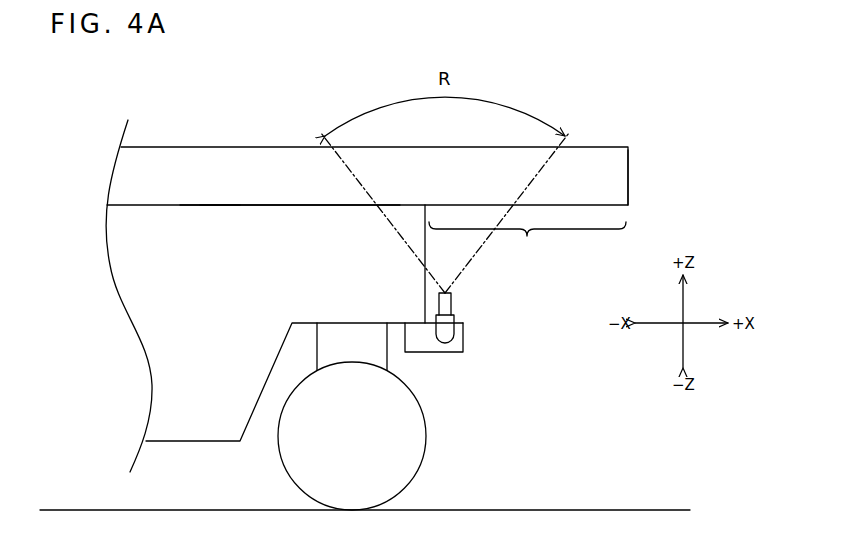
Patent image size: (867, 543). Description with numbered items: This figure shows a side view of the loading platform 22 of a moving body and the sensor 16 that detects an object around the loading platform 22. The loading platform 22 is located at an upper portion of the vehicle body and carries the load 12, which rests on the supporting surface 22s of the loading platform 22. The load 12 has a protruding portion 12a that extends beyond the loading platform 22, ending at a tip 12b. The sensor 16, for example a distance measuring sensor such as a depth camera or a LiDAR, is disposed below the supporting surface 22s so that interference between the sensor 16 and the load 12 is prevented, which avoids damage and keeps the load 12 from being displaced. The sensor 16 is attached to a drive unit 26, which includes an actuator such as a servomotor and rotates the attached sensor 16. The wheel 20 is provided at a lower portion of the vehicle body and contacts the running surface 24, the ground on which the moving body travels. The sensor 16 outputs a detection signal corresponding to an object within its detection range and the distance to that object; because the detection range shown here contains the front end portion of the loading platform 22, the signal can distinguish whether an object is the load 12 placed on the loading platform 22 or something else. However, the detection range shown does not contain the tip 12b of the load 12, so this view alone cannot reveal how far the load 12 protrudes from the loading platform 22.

The load 12 is at (168, 147).
The protruding portion 12a is at (527, 244).
The tip 12b is at (633, 170).
The loading platform 22 is at (263, 226).
The supporting surface 22s is at (206, 210).
The sensor 16 is at (437, 304).
The drive unit 26 is at (424, 348).
The wheel 20 is at (408, 449).
The running surface 24 is at (546, 506).